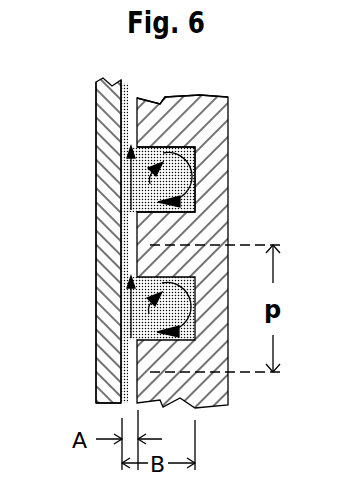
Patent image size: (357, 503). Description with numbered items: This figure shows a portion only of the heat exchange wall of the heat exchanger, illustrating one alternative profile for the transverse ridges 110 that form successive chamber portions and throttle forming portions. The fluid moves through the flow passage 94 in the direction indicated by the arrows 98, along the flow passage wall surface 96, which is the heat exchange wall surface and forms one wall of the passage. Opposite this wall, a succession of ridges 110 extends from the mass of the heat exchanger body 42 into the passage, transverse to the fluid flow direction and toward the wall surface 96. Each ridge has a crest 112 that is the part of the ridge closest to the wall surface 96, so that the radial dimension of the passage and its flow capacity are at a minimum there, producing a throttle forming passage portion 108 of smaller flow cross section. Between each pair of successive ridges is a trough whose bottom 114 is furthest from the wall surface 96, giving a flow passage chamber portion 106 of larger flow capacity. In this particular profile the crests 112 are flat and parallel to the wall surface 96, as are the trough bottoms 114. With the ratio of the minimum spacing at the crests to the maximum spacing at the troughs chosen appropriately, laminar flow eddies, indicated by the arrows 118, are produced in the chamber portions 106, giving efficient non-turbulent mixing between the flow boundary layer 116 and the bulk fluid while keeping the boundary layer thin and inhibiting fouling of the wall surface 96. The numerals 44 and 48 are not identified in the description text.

The heat exchanger body 42 is at (203, 99).
The flow channel 44 is at (125, 238).
The channel wall 48 is at (98, 280).
The flow passage 94 is at (130, 111).
The flow passage wall surface 96 is at (121, 203).
The fluid flow direction arrows 98 is at (125, 163).
The flow passage chamber portion 106 is at (187, 155).
The throttle forming passage portion 108 is at (134, 252).
The ridge 110 is at (163, 125).
The ridge crest 112 is at (125, 363).
The trough bottom 114 is at (180, 203).
The flow boundary layer 116 is at (128, 323).
The laminar flow eddy arrows 118 is at (182, 316).